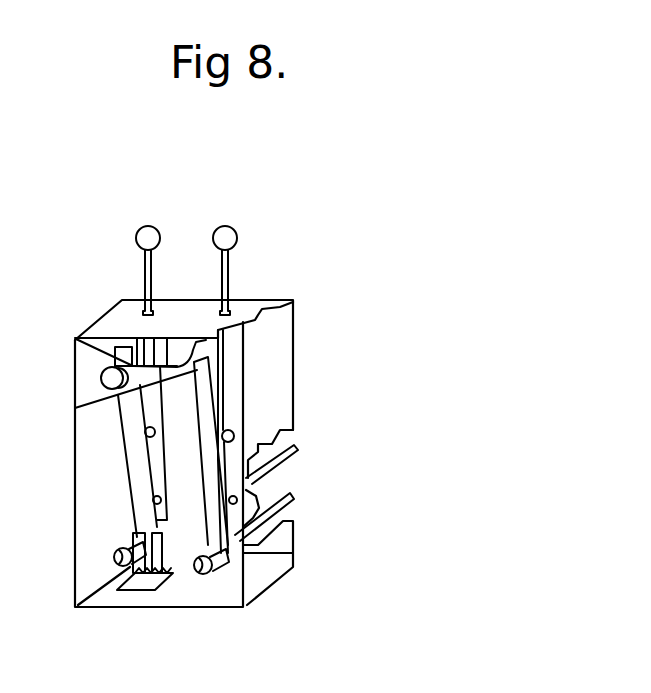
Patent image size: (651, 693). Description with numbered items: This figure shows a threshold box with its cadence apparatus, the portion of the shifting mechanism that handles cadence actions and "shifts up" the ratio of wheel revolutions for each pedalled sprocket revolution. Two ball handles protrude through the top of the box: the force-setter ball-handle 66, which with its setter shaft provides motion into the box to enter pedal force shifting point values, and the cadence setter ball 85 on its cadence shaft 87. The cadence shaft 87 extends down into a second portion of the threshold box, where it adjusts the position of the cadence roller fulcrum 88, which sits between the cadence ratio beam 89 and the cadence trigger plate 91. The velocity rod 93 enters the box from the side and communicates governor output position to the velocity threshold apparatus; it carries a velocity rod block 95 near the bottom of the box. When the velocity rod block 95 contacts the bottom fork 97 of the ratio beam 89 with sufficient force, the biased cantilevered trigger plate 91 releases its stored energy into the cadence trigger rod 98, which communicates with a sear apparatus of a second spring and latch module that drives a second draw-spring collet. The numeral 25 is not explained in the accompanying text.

The housing 25 is at (121, 322).
The force-setter ball-handle 66 is at (138, 237).
The cadence setter ball 85 is at (238, 237).
The cadence shaft 87 is at (228, 277).
The cadence roller fulcrum 88 is at (247, 434).
The cadence ratio beam 89 is at (221, 375).
The cadence trigger plate 91 is at (246, 387).
The velocity rod 93 is at (360, 510).
The velocity rod block 95 is at (231, 557).
The bottom fork of ratio beam 97 is at (230, 578).
The cadence trigger rod 98 is at (360, 467).